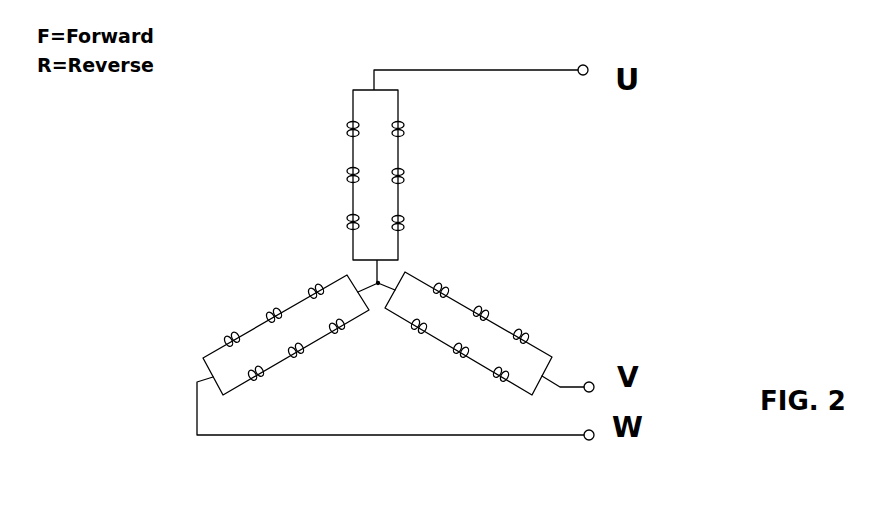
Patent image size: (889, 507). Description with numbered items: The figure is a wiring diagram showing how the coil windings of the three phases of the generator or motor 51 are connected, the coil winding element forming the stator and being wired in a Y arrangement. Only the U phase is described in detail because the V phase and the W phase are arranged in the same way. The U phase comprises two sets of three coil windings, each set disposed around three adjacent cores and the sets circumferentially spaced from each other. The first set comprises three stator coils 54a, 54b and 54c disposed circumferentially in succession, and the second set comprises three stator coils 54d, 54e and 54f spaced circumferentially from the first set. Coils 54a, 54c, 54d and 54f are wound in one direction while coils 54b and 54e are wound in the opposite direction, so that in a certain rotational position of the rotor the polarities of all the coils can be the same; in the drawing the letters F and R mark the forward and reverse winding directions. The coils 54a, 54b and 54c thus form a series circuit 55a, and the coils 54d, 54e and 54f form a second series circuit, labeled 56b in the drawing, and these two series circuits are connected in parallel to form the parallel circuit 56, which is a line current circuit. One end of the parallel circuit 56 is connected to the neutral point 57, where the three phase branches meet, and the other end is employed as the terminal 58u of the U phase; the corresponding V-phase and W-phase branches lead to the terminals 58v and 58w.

The generator or motor 51 is at (219, 285).
The stator coil 54a is at (406, 127).
The stator coil 54b is at (406, 176).
The stator coil 54c is at (406, 220).
The stator coil 54d is at (342, 135).
The stator coil 54e is at (344, 178).
The stator coil 54f is at (344, 227).
The series circuit 55a is at (533, 140).
The parallel circuit 56 is at (320, 98).
The second coil group 56b is at (232, 128).
The neutral point 57 is at (382, 280).
The terminal of the U phase 58u is at (583, 64).
The V-phase terminal 58v is at (590, 381).
The W-phase terminal 58w is at (589, 441).